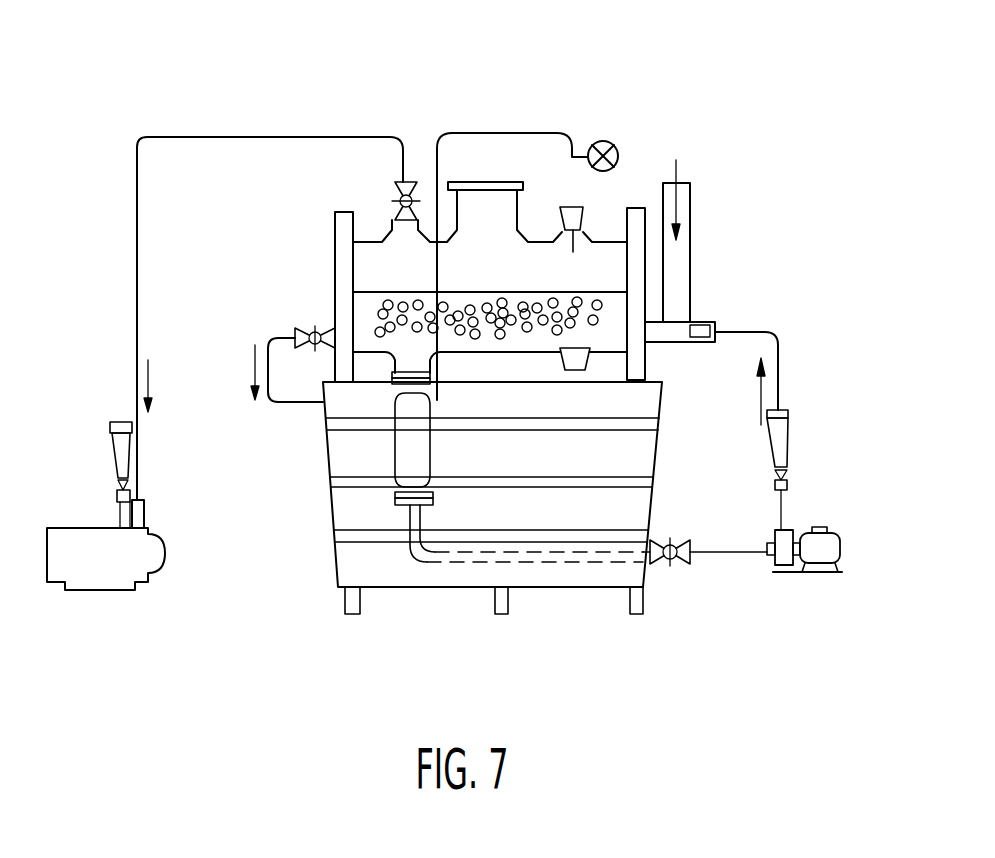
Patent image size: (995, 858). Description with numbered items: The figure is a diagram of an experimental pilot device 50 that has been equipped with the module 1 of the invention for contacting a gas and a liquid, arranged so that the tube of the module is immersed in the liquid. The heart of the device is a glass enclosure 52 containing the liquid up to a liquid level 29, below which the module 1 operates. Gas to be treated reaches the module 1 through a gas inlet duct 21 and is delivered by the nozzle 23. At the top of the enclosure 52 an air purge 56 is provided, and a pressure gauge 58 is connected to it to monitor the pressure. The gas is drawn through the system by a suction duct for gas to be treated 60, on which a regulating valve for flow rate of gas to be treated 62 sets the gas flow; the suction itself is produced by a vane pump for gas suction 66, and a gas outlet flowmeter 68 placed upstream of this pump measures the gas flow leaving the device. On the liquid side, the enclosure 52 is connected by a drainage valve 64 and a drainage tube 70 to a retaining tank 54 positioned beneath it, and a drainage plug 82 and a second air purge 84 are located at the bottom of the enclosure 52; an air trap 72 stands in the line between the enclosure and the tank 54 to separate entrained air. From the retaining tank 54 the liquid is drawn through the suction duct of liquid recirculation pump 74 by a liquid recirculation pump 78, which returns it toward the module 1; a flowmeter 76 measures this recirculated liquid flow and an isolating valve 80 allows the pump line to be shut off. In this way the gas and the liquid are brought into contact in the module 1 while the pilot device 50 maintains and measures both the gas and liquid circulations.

The module 1 is at (678, 352).
The gas inlet duct 21 is at (692, 255).
The nozzle 23 is at (700, 342).
The liquid level 29 is at (503, 292).
The pilot device 50 is at (232, 93).
The glass enclosure 52 is at (375, 242).
The retaining tank 54 is at (330, 508).
The air purge 56 is at (540, 133).
The pressure gauge 58 is at (608, 141).
The suction duct for gas to be treated 60 is at (137, 148).
The regulating valve for flow rate of gas to be treated 62 is at (392, 185).
The drainage valve 64 is at (302, 328).
The vane pump for gas suction 66 is at (97, 582).
The gas outlet flowmeter 68 is at (112, 465).
The drainage tube 70 is at (272, 412).
The air trap 72 is at (432, 447).
The suction duct of liquid recirculation pump 74 is at (557, 565).
The flowmeter 76 is at (789, 440).
The liquid recirculation pump 78 is at (818, 574).
The isolating valve 80 is at (692, 558).
The drainage plug 82 is at (583, 372).
The air purge 84 is at (432, 358).